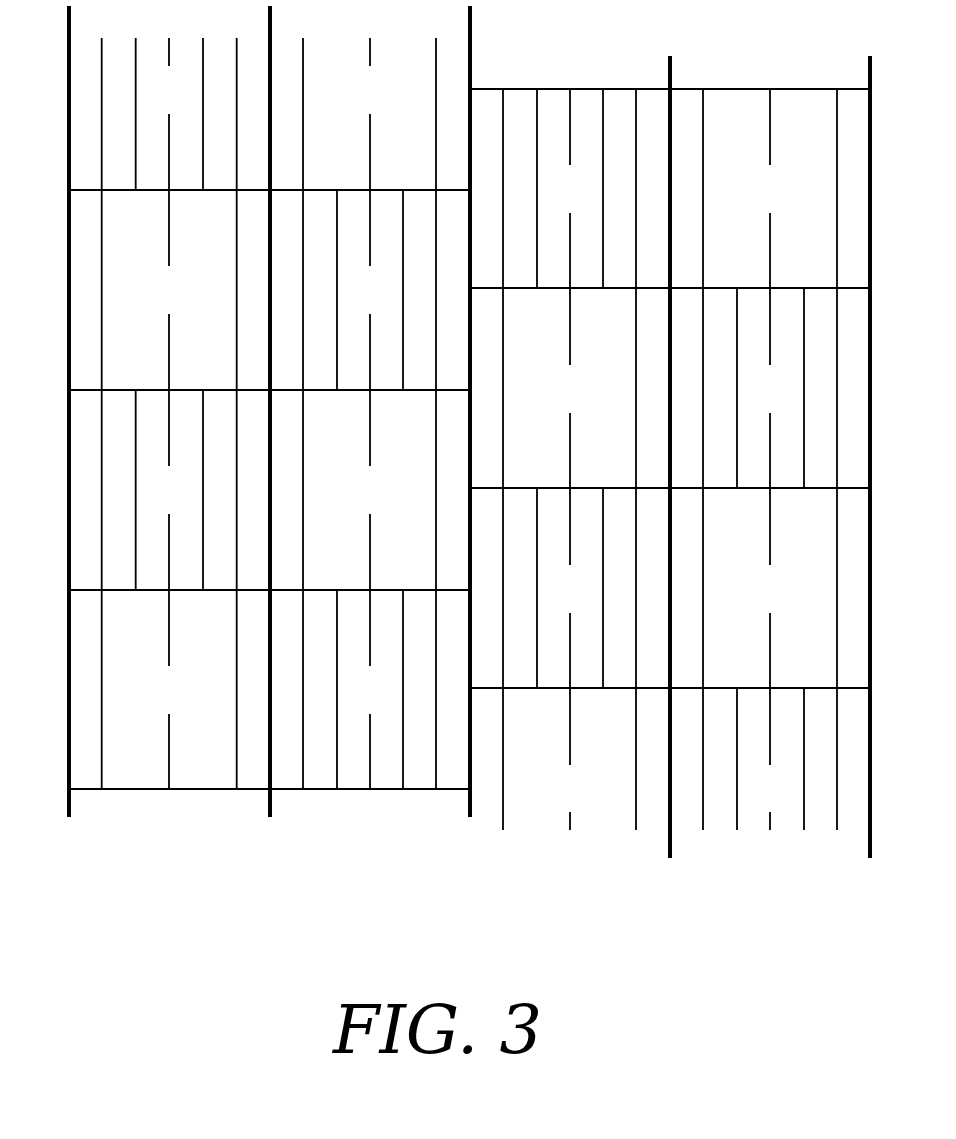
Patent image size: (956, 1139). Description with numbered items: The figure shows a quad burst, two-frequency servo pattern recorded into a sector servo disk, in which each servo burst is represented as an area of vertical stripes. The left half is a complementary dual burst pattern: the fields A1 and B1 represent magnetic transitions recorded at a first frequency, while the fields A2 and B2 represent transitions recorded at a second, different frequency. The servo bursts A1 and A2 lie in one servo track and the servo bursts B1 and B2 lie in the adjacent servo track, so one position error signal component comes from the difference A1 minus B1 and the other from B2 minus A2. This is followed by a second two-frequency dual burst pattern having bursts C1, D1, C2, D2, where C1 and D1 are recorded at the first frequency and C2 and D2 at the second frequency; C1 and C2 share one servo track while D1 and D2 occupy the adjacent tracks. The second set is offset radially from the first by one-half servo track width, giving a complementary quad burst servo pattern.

The servo burst A1 is at (169, 314).
The servo burst A2 is at (369, 314).
The servo burst B1 is at (369, 489).
The servo burst B2 is at (169, 489).
The servo burst C1 is at (569, 388).
The servo burst C2 is at (770, 388).
The servo burst D1 is at (770, 559).
The servo burst D2 is at (569, 559).